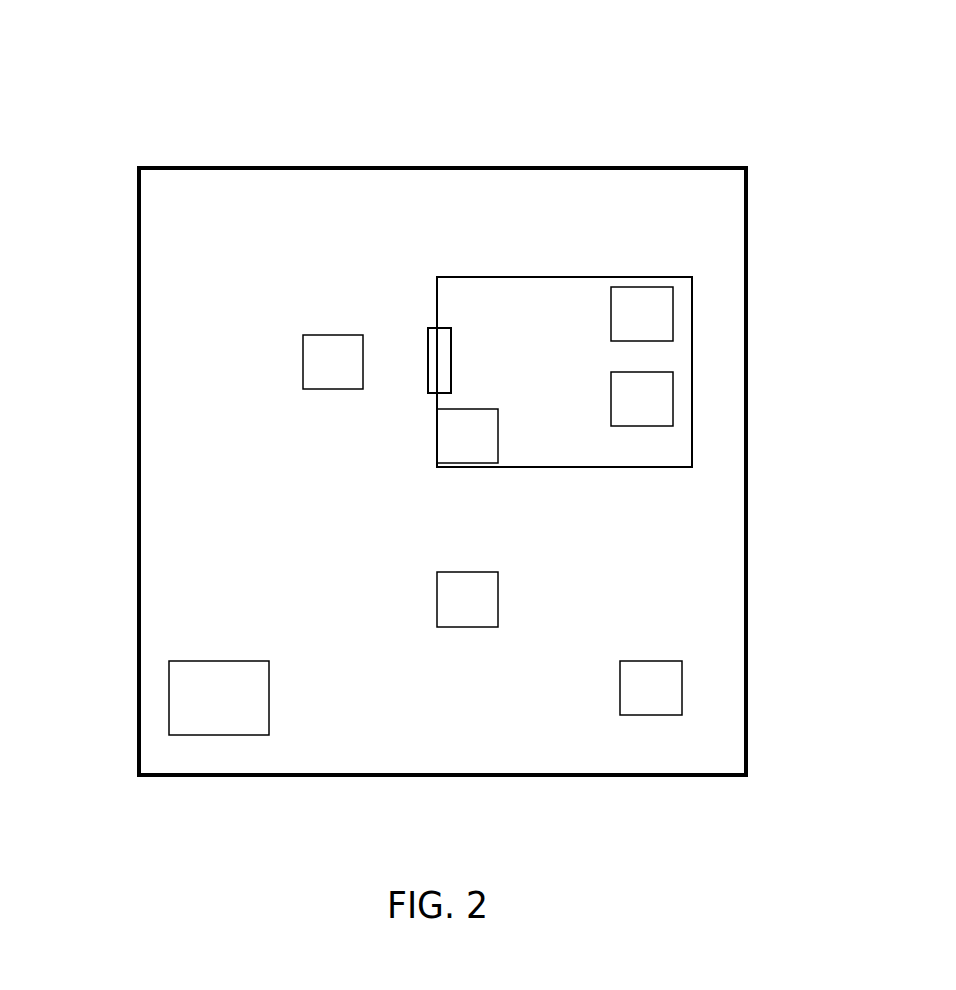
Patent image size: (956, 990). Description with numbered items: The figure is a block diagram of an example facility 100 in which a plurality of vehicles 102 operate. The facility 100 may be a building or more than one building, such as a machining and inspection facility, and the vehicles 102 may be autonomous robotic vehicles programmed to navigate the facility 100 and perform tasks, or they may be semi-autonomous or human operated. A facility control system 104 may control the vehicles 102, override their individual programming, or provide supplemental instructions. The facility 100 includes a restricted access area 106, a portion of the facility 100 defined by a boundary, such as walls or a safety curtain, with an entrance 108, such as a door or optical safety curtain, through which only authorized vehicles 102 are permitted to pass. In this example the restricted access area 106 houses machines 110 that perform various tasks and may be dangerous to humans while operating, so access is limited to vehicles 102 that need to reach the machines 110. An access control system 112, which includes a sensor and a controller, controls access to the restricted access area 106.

The facility 100 is at (137, 301).
The vehicles 102 is at (355, 373).
The facility control system 104 is at (241, 709).
The restricted access area 106 is at (692, 338).
The entrance 108 is at (429, 328).
The machines 110 is at (663, 325).
The access control system 112 is at (489, 447).